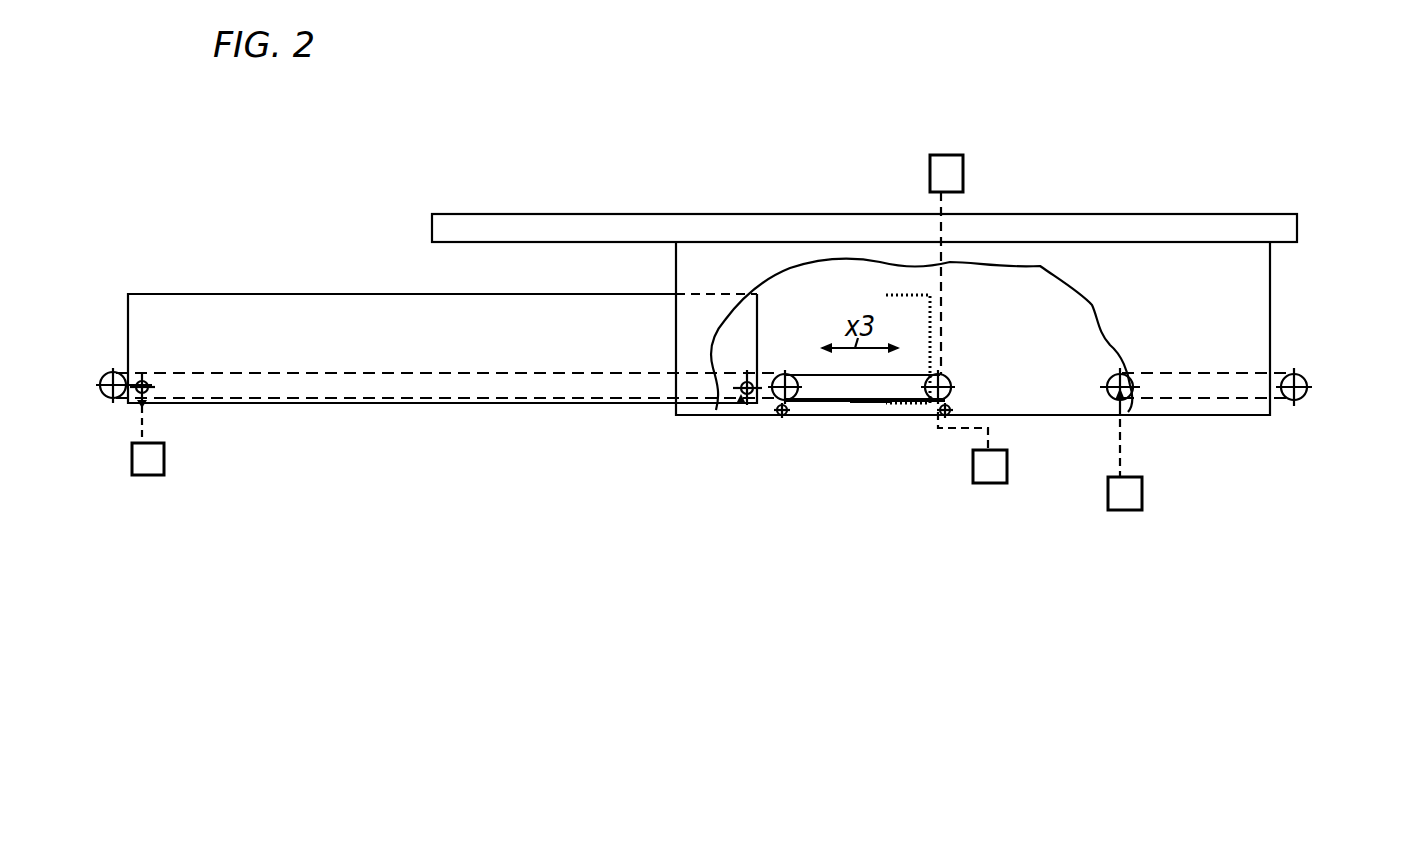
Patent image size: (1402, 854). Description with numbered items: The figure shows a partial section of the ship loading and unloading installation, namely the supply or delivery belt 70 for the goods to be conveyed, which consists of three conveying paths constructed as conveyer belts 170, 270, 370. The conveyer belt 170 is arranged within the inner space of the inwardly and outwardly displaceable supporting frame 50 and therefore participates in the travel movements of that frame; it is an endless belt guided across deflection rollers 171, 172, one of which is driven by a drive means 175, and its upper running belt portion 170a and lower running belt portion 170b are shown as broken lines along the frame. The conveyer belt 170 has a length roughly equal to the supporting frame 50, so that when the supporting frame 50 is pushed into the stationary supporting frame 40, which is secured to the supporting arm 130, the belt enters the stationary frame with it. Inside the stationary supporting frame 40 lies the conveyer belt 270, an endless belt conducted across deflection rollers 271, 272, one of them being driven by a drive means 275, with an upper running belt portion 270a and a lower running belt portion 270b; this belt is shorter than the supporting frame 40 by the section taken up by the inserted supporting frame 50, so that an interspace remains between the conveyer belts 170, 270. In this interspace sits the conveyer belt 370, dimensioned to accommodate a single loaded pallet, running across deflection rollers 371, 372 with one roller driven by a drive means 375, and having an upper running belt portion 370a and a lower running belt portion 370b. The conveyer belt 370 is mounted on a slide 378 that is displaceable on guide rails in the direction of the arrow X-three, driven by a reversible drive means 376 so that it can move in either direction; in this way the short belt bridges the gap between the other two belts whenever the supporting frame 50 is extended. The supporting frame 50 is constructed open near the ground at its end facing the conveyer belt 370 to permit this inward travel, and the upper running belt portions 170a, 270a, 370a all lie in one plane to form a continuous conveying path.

The stationary supporting frame 40 is at (1057, 257).
The supporting frame 50 is at (225, 312).
The supply or delivery belt 70 is at (618, 424).
The supporting arm 130 is at (478, 236).
The conveyer belt 170 is at (445, 334).
The upper running belt portion 170a is at (346, 372).
The lower running belt portion 170b is at (438, 401).
The deflection roller 171 is at (118, 368).
The deflection roller 172 is at (734, 410).
The drive means 175 is at (138, 470).
The conveyer belt 270 is at (1207, 337).
The upper running belt portion 270a is at (1196, 372).
The lower running belt portion 270b is at (1240, 405).
The deflection roller 271 is at (1126, 360).
The deflection roller 272 is at (1300, 378).
The drive means 275 is at (1123, 505).
The conveyer belt 370 is at (852, 337).
The upper running belt portion 370a is at (808, 372).
The lower running belt portion 370b is at (826, 405).
The deflection roller 371 is at (773, 414).
The deflection roller 372 is at (948, 374).
The drive means 375 is at (948, 160).
The drive means 376 is at (990, 472).
The slide 378 is at (869, 406).